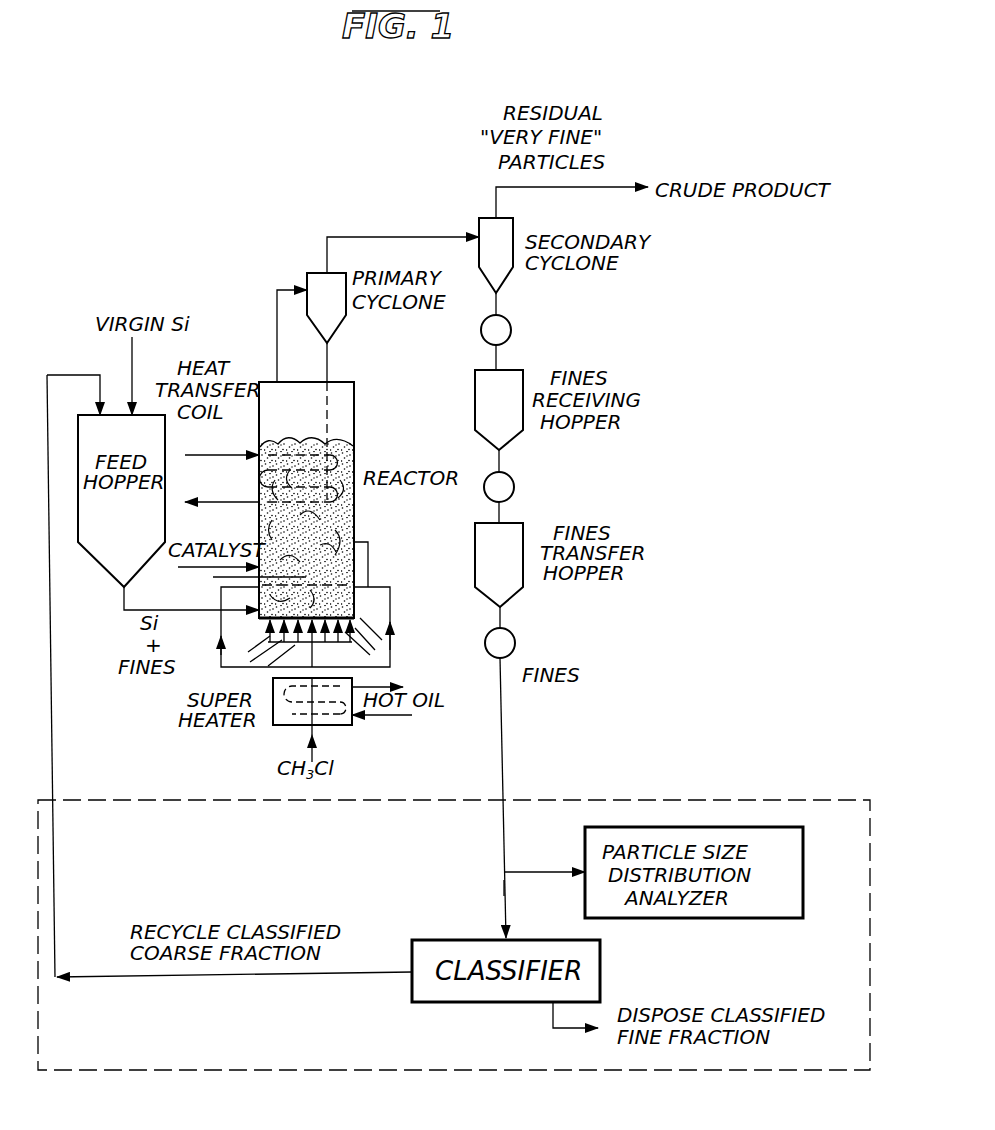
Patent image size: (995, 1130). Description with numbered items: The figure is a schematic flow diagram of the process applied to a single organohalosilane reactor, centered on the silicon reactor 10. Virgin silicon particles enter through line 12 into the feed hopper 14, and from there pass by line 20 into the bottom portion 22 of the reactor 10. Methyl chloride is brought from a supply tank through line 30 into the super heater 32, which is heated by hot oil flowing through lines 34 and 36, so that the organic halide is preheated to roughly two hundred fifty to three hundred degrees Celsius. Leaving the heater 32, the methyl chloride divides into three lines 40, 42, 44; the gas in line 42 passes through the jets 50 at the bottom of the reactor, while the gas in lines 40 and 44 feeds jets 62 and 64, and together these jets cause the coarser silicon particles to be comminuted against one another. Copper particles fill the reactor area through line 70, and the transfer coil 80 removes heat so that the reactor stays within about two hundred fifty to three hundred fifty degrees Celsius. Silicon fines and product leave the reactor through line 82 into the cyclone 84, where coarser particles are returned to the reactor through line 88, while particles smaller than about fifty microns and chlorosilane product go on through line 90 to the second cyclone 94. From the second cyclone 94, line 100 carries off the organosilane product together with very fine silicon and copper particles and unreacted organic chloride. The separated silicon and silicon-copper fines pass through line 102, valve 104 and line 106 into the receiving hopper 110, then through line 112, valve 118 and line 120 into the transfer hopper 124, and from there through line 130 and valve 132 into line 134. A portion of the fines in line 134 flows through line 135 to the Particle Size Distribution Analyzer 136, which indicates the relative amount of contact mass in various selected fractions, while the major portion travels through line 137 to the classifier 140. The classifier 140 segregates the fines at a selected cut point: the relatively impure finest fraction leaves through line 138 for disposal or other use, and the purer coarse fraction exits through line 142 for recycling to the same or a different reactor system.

The silicon reactor 10 is at (355, 412).
The line 12 is at (132, 352).
The feed hopper 14 is at (95, 414).
The line 20 is at (124, 607).
The bottom portion 22 is at (372, 568).
The line 30 is at (310, 742).
The super heater 32 is at (352, 725).
The line 34 is at (410, 717).
The line 36 is at (410, 684).
The line 40 is at (221, 649).
The line 42 is at (312, 650).
The line 44 is at (392, 630).
The jets 50 is at (305, 642).
The jet 62 is at (230, 578).
The jet 64 is at (322, 588).
The line 70 is at (180, 568).
The transfer coil 80 is at (226, 455).
The line 82 is at (277, 305).
The cyclone 84 is at (345, 330).
The line 88 is at (330, 367).
The line 90 is at (400, 237).
The second cyclone 94 is at (513, 226).
The line 100 is at (615, 187).
The line 102 is at (498, 308).
The valve 104 is at (511, 330).
The line 106 is at (498, 358).
The receiving hopper 110 is at (475, 390).
The line 112 is at (501, 458).
The valve 118 is at (514, 490).
The line 120 is at (501, 512).
The transfer hopper 124 is at (475, 528).
The line 130 is at (502, 618).
The valve 132 is at (515, 645).
The line 134 is at (503, 725).
The line 135 is at (535, 872).
The Particle Size Distribution Analyzer 136 is at (690, 918).
The line 137 is at (504, 888).
The line 138 is at (550, 1018).
The classifier 140 is at (488, 940).
The line 142 is at (108, 978).